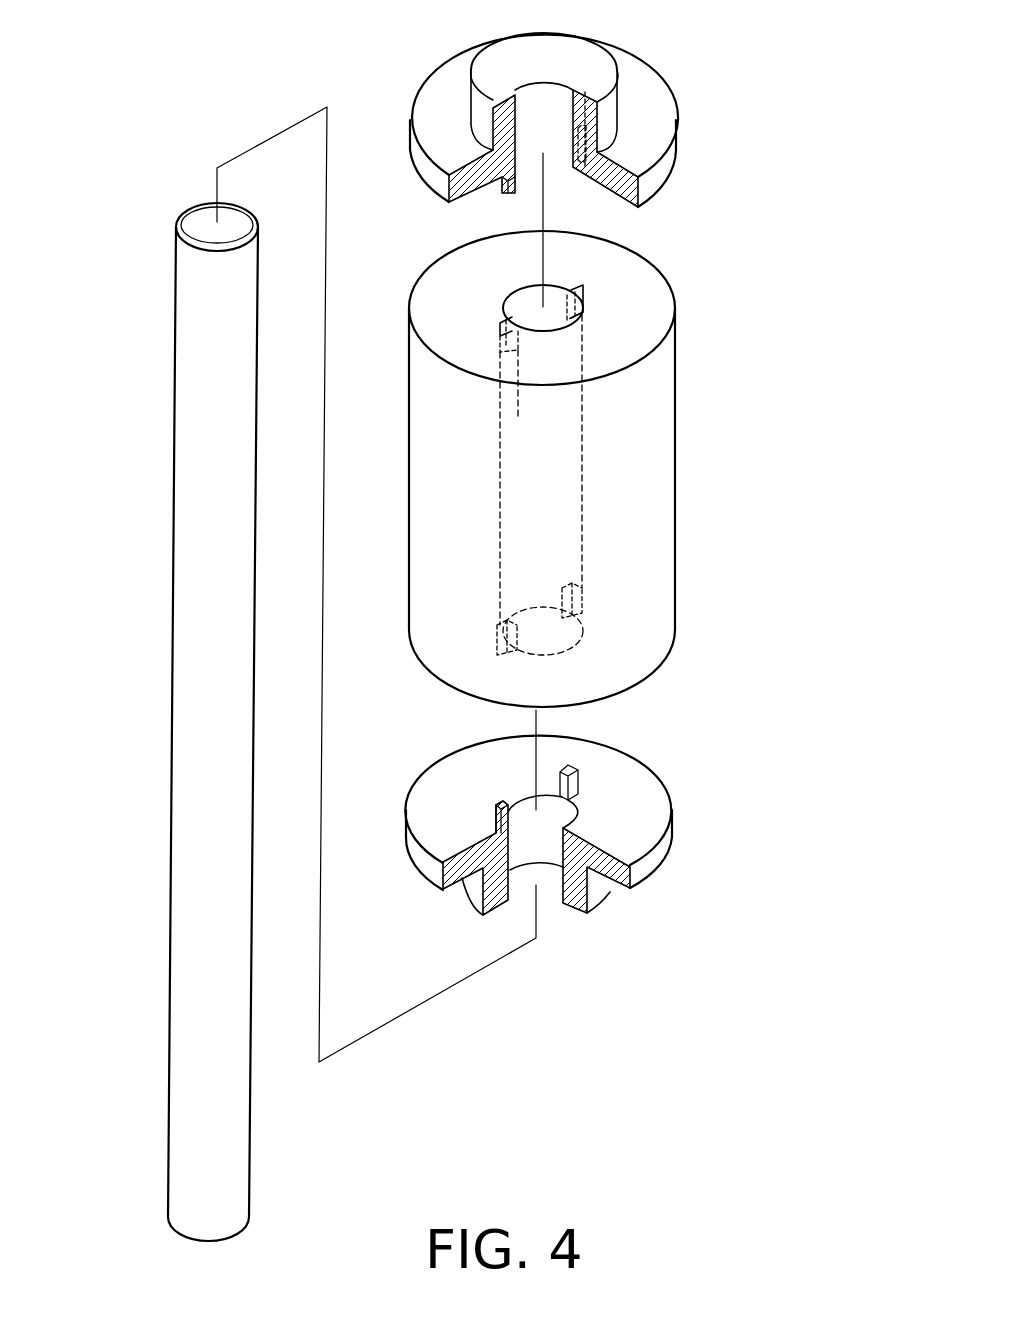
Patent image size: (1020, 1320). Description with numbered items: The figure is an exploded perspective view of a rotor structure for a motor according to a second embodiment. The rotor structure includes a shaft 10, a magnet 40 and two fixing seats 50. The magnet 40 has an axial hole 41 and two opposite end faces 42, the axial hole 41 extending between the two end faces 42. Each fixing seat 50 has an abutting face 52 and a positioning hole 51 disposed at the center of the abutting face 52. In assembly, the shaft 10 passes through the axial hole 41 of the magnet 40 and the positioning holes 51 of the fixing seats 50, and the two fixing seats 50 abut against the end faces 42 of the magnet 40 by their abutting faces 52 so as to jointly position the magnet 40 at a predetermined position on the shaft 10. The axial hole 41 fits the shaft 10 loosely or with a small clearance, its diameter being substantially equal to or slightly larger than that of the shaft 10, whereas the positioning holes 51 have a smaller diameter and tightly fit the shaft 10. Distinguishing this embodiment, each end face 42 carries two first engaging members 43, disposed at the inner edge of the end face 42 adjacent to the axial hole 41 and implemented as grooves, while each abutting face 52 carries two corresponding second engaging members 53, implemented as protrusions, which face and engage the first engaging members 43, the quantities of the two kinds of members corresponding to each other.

The shaft 10 is at (190, 527).
The magnet 40 is at (590, 453).
The axial hole 41 is at (543, 295).
The end face 42 is at (640, 330).
The first engaging member 43 is at (583, 291).
The fixing seat 50 is at (573, 471).
The positioning hole 51 is at (553, 68).
The abutting face 52 is at (450, 208).
The second engaging member 53 is at (500, 187).